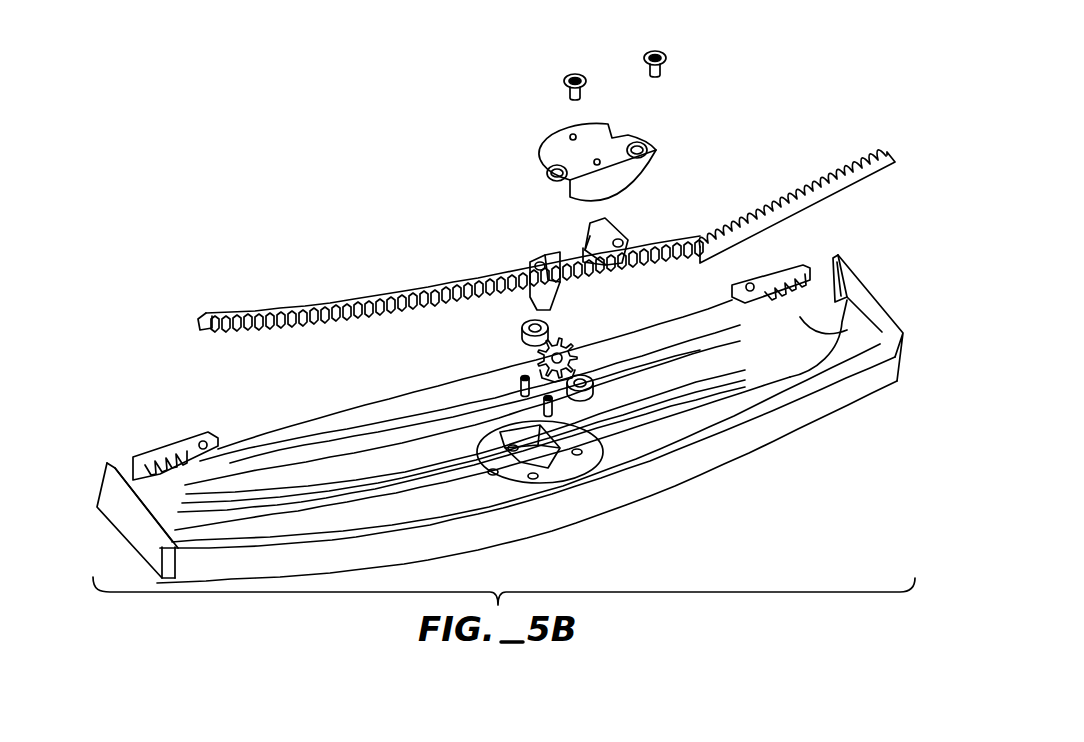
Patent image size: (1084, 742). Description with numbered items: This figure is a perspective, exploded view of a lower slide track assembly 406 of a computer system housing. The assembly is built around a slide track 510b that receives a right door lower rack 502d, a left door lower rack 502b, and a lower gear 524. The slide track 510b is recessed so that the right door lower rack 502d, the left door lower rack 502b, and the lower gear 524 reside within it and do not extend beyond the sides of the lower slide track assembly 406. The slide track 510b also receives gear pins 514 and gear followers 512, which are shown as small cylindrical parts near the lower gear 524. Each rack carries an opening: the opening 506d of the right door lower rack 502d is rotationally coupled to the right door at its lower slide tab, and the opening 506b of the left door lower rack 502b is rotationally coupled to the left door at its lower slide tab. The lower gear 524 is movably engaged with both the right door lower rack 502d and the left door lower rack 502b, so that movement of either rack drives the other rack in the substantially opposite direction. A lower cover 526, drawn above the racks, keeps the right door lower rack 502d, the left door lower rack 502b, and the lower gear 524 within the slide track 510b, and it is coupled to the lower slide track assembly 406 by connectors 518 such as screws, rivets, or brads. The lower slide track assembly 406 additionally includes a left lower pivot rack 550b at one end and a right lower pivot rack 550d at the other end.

The lower slide track assembly 406 is at (700, 480).
The left door lower rack 502b is at (804, 196).
The right door lower rack 502d is at (400, 290).
The opening of left door lower rack 506b is at (535, 263).
The opening of right door lower rack 506d is at (631, 242).
The slide track 510b is at (348, 500).
The gear followers 512 is at (585, 378).
The gear pins 514 is at (545, 402).
The connectors 518 is at (662, 74).
The lower gear 524 is at (536, 360).
The lower cover 526 is at (541, 150).
The left lower pivot rack 550b is at (187, 436).
The right lower pivot rack 550d is at (800, 262).